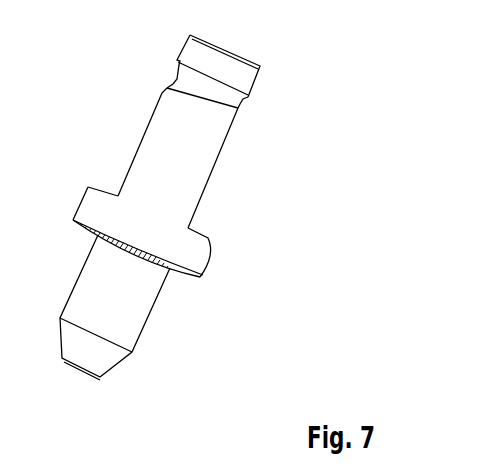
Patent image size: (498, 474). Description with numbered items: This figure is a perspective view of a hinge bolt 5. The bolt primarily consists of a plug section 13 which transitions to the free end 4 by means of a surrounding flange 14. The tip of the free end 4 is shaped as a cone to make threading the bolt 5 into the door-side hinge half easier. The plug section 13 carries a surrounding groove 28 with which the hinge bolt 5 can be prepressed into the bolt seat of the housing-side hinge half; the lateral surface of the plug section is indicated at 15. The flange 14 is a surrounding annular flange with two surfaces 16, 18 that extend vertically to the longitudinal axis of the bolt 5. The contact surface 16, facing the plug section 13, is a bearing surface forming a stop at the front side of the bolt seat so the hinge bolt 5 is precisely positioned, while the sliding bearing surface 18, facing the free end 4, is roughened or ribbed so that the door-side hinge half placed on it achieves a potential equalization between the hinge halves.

The hinge bolt 5 is at (64, 74).
The surrounding groove 28 is at (244, 108).
The plug section 13 is at (208, 143).
The lateral surface 15 is at (140, 142).
The surrounding flange 14 is at (163, 258).
The contact surface 16 is at (203, 226).
The sliding bearing surface 18 is at (183, 280).
The free end 4 is at (128, 327).